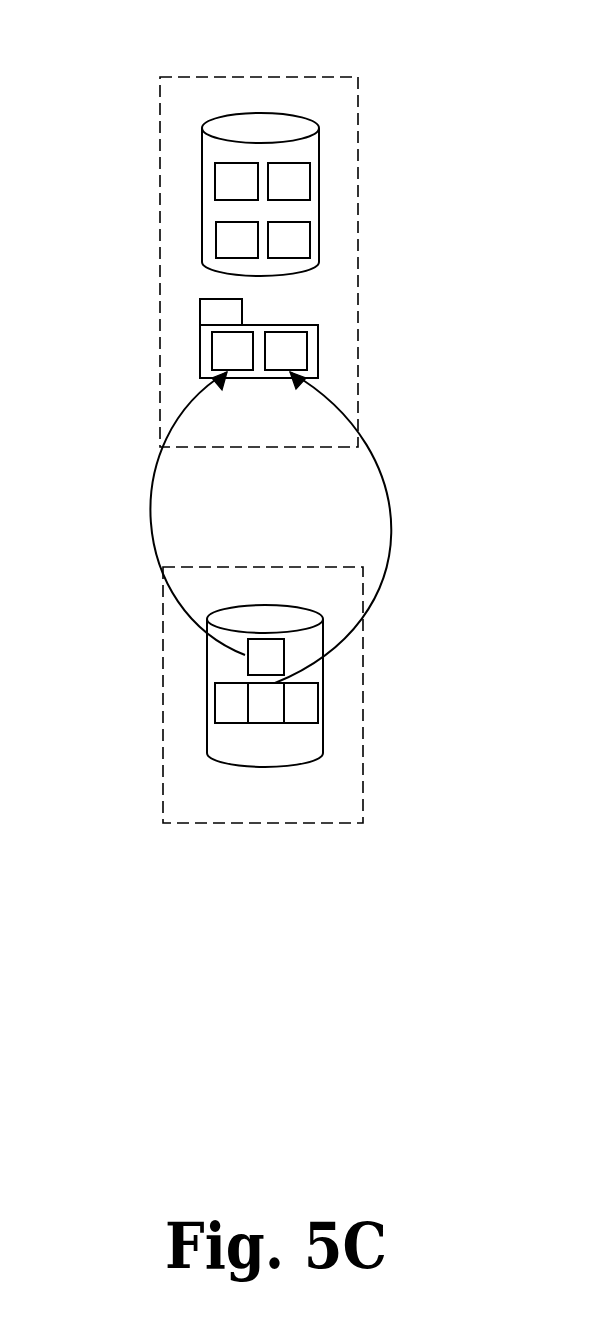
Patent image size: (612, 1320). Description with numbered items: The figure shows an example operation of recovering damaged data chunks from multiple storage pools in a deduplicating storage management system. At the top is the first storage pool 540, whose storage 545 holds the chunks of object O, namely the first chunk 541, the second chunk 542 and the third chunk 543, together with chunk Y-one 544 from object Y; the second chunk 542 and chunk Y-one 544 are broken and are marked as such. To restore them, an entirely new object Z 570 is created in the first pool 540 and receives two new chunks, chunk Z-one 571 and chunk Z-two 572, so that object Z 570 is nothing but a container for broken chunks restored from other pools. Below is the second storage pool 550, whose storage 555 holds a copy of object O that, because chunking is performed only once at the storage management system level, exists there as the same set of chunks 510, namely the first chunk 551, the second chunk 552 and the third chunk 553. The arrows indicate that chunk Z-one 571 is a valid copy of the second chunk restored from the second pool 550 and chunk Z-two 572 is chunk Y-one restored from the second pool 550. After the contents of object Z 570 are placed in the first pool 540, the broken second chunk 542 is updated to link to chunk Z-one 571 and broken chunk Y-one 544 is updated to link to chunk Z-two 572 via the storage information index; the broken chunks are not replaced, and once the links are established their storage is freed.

The storage pool P1 540 is at (287, 77).
The first peer object store 545 is at (225, 117).
The data chunk O1 541 is at (215, 177).
The broken chunk O2 542 is at (310, 177).
The data chunk O3 543 is at (310, 237).
The broken chunk Y1 544 is at (216, 235).
The object Z 570 is at (200, 313).
The chunk Z1 571 is at (212, 353).
The chunk Z2 572 is at (307, 352).
The storage pool P2 550 is at (312, 567).
The second peer object store 555 is at (267, 605).
The object row O1 O2 O3 510 is at (318, 700).
The object O1 in second peer 551 is at (227, 723).
The object O2 in second peer 552 is at (265, 723).
The object O3 in second peer 553 is at (307, 723).